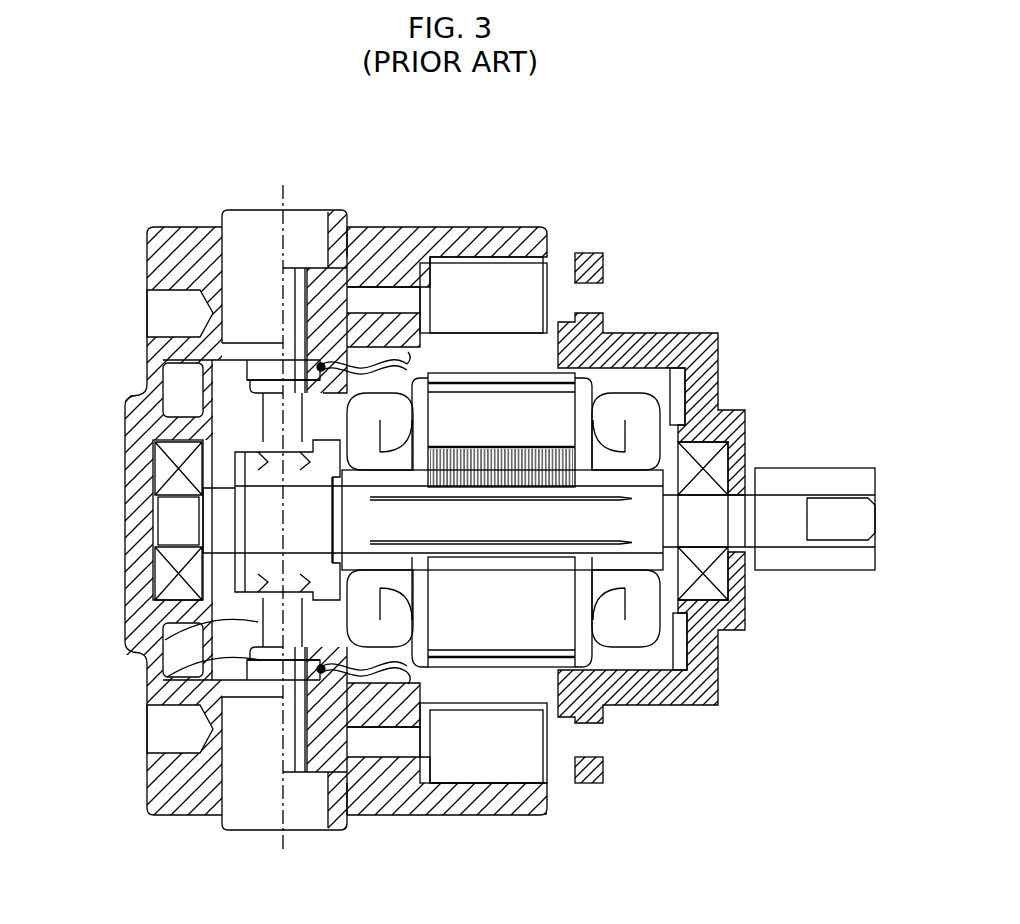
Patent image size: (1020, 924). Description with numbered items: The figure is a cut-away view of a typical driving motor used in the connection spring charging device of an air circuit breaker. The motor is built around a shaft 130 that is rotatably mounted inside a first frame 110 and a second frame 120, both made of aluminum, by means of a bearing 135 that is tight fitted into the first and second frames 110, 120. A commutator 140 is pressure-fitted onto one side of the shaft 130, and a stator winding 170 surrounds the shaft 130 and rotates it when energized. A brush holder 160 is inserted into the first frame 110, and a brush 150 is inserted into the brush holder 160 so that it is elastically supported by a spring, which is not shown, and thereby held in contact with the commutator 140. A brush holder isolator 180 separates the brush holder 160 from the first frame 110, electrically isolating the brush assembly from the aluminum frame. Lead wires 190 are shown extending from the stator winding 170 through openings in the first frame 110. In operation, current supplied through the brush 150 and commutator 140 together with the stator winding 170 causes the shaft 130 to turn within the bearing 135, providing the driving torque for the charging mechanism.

The first frame 110 is at (197, 228).
The second frame 120 is at (668, 333).
The shaft 130 is at (400, 525).
The bearing 135 is at (165, 468).
The commutator 140 is at (253, 448).
The brush 150 is at (150, 640).
The brush holder 160 is at (193, 676).
The stator winding 170 is at (627, 393).
The brush holder isolator 180 is at (255, 792).
The lead wire 190 is at (403, 375).